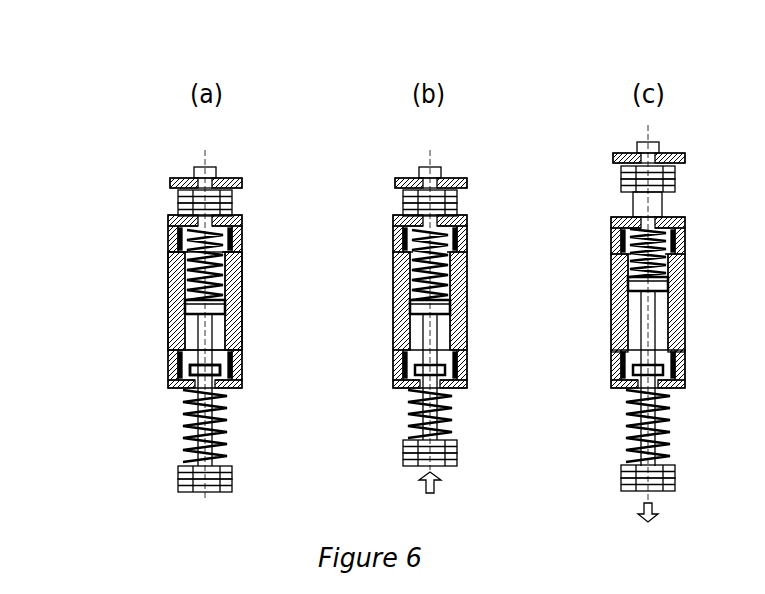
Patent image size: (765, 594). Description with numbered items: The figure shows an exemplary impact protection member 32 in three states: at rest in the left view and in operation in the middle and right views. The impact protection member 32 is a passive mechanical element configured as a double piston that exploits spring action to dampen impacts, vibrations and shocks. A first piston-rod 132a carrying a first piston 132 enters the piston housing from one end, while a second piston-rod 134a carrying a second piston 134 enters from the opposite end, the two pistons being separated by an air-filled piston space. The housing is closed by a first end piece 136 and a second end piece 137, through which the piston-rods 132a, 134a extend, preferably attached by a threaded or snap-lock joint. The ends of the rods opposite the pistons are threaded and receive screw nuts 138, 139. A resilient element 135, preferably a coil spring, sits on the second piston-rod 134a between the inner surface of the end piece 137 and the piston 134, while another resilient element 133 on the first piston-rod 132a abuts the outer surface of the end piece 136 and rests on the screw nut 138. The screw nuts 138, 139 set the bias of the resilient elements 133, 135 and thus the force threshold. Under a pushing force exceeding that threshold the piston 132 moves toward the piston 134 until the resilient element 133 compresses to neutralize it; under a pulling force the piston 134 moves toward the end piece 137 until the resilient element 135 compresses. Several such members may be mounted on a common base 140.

The impact protection member 32 is at (128, 77).
The first piston 132 is at (190, 367).
The first piston-rod 132a is at (228, 440).
The resilient element 133 is at (185, 428).
The second piston 134 is at (227, 312).
The second piston-rod 134a is at (228, 268).
The resilient element 135 is at (178, 270).
The first end piece 136 is at (240, 382).
The second end piece 137 is at (168, 217).
The screw nut 138 is at (225, 485).
The screw nut 139 is at (233, 205).
The common base 140 is at (240, 180).